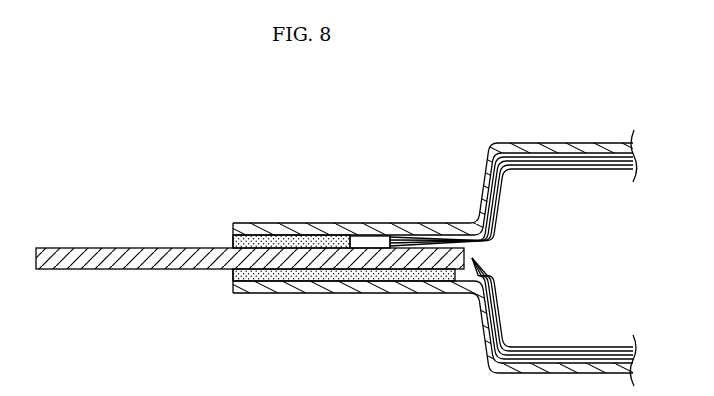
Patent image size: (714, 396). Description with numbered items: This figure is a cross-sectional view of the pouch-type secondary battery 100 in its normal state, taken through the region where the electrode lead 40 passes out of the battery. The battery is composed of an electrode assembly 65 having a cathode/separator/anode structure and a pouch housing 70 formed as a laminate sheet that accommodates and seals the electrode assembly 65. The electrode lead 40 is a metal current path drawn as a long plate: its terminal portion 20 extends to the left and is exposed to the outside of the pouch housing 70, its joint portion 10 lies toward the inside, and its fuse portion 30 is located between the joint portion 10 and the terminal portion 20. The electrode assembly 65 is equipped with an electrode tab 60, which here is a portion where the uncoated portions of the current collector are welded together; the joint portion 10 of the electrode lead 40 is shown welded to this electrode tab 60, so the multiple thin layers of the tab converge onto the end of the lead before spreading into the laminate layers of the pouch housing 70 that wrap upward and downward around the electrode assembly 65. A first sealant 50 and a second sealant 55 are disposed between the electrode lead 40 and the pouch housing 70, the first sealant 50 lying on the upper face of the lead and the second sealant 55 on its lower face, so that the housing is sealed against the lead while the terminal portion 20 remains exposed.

The pouch-type secondary battery 100 is at (115, 146).
The electrode lead 40 is at (404, 183).
The terminal portion 20 is at (160, 248).
The fuse portion 30 is at (329, 254).
The first sealant 50 is at (230, 236).
The second sealant 55 is at (235, 278).
The joint portion 10 is at (404, 237).
The electrode tab 60 is at (433, 240).
The pouch housing 70 is at (500, 143).
The electrode assembly 65 is at (575, 270).